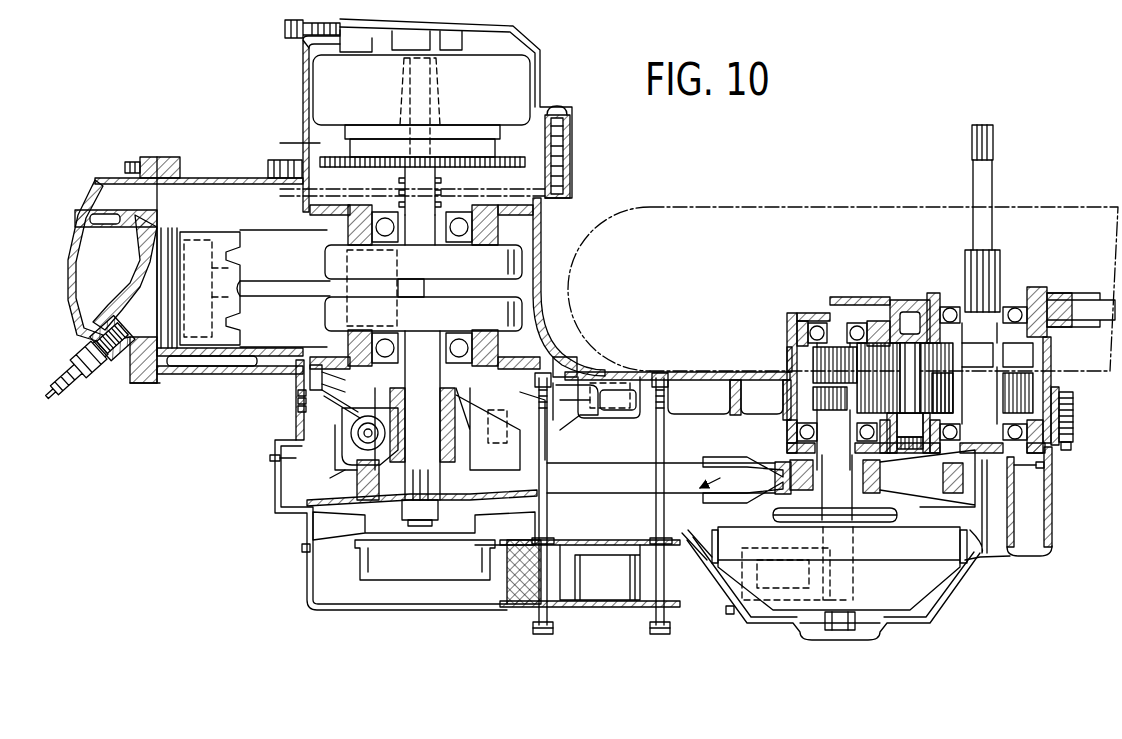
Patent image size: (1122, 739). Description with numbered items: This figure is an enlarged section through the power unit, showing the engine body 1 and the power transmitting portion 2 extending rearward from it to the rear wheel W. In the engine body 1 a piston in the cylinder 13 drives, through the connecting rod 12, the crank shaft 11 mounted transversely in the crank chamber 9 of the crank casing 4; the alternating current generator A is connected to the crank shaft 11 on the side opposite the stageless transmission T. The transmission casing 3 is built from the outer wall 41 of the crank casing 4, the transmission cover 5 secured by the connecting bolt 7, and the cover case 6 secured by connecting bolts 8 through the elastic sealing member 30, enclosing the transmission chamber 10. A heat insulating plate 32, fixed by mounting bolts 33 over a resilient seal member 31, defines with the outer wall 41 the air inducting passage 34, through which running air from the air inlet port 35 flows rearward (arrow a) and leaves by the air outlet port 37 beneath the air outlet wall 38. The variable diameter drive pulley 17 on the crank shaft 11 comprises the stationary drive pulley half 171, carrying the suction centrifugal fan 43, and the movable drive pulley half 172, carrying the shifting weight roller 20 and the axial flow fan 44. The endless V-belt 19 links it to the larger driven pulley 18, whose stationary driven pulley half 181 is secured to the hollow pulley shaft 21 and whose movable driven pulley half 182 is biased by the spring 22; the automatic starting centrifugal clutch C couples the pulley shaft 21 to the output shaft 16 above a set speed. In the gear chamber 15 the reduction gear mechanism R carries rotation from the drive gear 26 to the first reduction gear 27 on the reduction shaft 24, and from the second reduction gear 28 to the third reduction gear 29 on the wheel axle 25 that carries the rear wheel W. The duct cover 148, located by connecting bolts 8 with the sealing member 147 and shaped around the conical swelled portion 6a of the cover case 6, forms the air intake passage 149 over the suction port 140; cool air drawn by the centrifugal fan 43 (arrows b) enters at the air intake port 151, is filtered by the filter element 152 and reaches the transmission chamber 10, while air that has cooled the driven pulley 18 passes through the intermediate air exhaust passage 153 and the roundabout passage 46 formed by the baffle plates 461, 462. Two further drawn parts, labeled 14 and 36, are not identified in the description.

The alternating current generator A is at (484, 32).
The engine body 1 is at (205, 188).
The cylinder 13 is at (238, 224).
The connecting rod 12 is at (272, 266).
The piston 14 is at (222, 312).
The crank chamber 9 is at (506, 284).
The crank shaft 11 is at (422, 368).
The air inducting passage 34 is at (322, 364).
The seal 36 is at (298, 393).
The air inlet port 35 is at (298, 404).
The mounting bolts 33 is at (298, 416).
The arrow a is at (296, 388).
The shifting weight roller 20 is at (370, 414).
The axial flow fan 44 is at (340, 455).
The variable diameter drive pulley 17 is at (302, 482).
The movable drive pulley half 172 is at (326, 481).
The stationary drive pulley half 171 is at (345, 500).
The suction centrifugal fan 43 is at (511, 533).
The suction port 140 is at (395, 584).
The duct cover 148 is at (348, 612).
The elastic sealing member 30 is at (270, 458).
The sealing member 147 is at (302, 548).
The filter element 152 is at (522, 606).
The air intake passage 149 is at (625, 595).
The air intake port 151 is at (594, 607).
The connecting bolts 8 is at (602, 512).
The arrow b is at (368, 400).
The transmission chamber 10 is at (642, 440).
The resilient seal member 31 is at (576, 408).
The heat insulating plate 32 is at (598, 420).
The crank casing 4 is at (588, 378).
The air outlet wall 38 is at (608, 378).
The air outlet port 37 is at (624, 380).
The power transmitting portion 2 is at (660, 370).
The rear wheel W is at (760, 205).
The reduction gear mechanism R is at (790, 368).
The endless V-belt 19 is at (578, 495).
The V belt type stageless transmission T is at (686, 461).
The driven pulley 18 is at (734, 427).
The stationary driven pulley half 181 is at (715, 457).
The movable driven pulley half 182 is at (740, 467).
The drive gear 26 is at (826, 386).
The second reduction gear 28 is at (896, 400).
The gear chamber 15 is at (870, 405).
The output shaft 16 is at (840, 455).
The reduction shaft 24 is at (908, 433).
The hollow pulley shaft 21 is at (856, 474).
The spring 22 is at (855, 525).
The first reduction gear 27 is at (988, 330).
The wheel axle 25 is at (962, 378).
The third reduction gear 29 is at (1059, 350).
The outer wall of the crank casing 41 is at (1052, 376).
The transmission cover 5 is at (795, 440).
The transmission casing 3 is at (1100, 500).
The connecting bolt 7 is at (1066, 450).
The cover case 6 is at (1055, 492).
The baffle plate 461 is at (988, 553).
The roundabout passage 46 is at (1030, 550).
The baffle plate 462 is at (1013, 508).
The automatic starting centrifugal clutch C is at (740, 548).
The intermediate air exhaust passage 153 is at (698, 588).
The conical swelled portion 6a is at (720, 592).